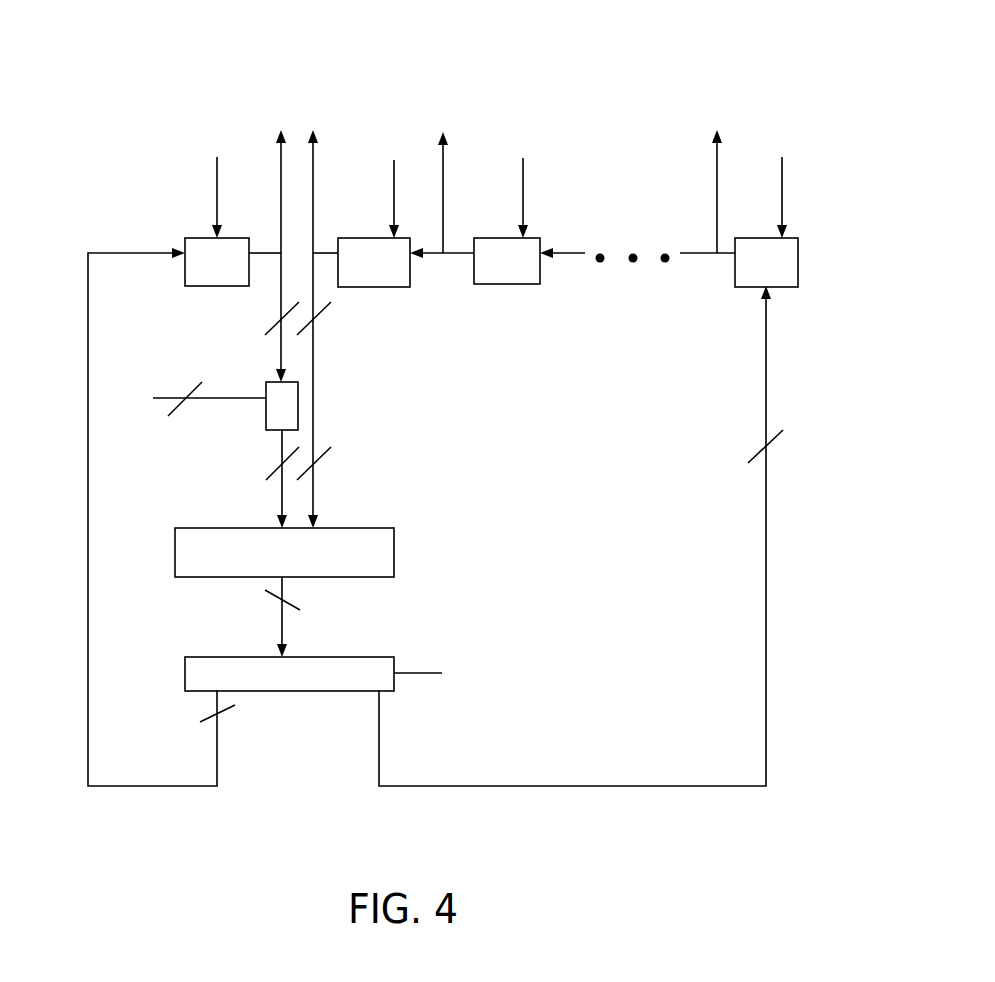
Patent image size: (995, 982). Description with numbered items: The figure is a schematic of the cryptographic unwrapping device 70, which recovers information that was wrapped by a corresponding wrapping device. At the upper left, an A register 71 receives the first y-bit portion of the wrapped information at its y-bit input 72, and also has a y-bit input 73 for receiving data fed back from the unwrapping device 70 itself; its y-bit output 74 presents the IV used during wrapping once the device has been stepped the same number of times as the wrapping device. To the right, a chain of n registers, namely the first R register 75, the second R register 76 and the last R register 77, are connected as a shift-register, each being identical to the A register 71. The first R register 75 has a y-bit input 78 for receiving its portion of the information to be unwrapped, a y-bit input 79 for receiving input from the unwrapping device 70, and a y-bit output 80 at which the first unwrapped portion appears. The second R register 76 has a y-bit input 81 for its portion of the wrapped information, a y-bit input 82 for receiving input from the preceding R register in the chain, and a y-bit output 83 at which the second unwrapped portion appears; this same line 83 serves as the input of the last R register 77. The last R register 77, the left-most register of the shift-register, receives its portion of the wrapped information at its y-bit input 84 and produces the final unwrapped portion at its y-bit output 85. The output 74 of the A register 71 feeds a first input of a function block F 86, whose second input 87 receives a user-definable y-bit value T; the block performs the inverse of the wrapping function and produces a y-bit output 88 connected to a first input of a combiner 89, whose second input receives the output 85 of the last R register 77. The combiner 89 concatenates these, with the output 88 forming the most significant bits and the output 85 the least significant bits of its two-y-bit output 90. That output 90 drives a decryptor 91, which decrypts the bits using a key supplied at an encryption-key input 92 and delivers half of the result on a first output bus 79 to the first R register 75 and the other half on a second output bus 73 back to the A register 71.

The unwrapping device 70 is at (636, 56).
The A register 71 is at (200, 222).
The y-bit input of A register 72 is at (217, 189).
The second output bus 73 is at (137, 253).
The y-bit output of A register 74 is at (281, 189).
The R1 register 75 is at (750, 237).
The R2 register 76 is at (492, 237).
The Rn register 77 is at (378, 222).
The y-bit input of R1 register 78 is at (782, 188).
The first output bus 79 is at (766, 334).
The y-bit output of R1 register 80 is at (717, 173).
The y-bit input of R2 register 81 is at (523, 188).
The y-bit input of R2 register from preceding register 82 is at (572, 253).
The y-bit output of R2 register 83 is at (459, 253).
The y-bit input of Rn register 84 is at (394, 197).
The y-bit output of Rn register 85 is at (313, 157).
The function block F 86 is at (266, 416).
The tag T input line 87 is at (249, 398).
The y-bit output of function block F 88 is at (282, 495).
The combiner 89 is at (394, 543).
The output of combiner 90 is at (282, 625).
The decryptor 91 is at (185, 670).
The encryption-key input 92 is at (427, 673).